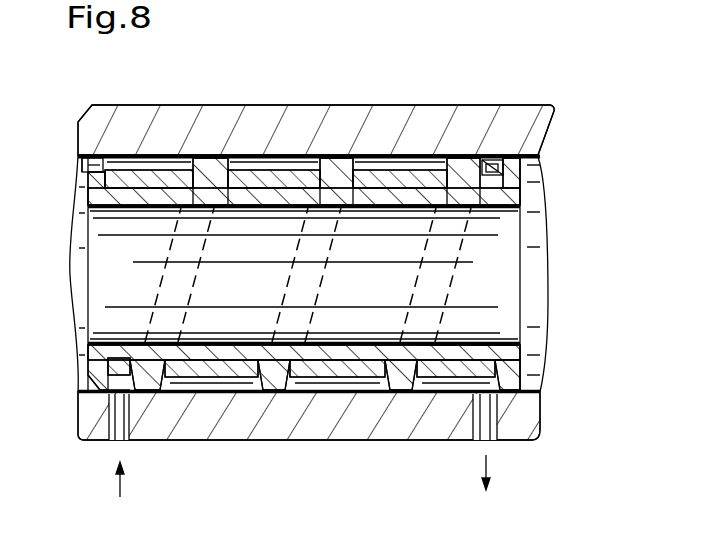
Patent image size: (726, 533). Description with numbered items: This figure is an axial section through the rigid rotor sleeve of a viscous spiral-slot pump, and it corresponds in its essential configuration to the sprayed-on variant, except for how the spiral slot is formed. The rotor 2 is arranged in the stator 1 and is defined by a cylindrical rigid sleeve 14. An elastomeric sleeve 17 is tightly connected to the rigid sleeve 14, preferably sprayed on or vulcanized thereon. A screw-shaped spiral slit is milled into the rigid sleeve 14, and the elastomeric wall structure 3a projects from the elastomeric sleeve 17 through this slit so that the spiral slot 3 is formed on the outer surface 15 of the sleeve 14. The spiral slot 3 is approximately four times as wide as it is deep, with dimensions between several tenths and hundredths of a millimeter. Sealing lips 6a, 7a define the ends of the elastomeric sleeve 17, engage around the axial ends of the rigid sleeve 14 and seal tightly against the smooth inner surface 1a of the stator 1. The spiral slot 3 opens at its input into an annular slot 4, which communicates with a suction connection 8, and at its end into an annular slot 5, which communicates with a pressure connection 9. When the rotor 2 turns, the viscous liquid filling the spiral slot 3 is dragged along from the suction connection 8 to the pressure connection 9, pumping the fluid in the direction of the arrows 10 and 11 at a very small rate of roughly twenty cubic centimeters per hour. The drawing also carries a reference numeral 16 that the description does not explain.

The stator 1 is at (533, 122).
The smooth inner surface of stator 1a is at (84, 158).
The rotor 2 is at (522, 258).
The spiral slot 3 is at (257, 160).
The wall structure 3a is at (337, 160).
The annular slot 4 is at (112, 380).
The annular slot 5 is at (490, 163).
The sealing lip 6a is at (98, 173).
The sealing lip 7a is at (545, 172).
The suction connection 8 is at (120, 425).
The pressure connection 9 is at (483, 420).
The arrow 10 is at (122, 485).
The arrow 11 is at (488, 468).
The cylindrical sleeve 14 is at (482, 365).
The outer surface 15 is at (358, 377).
The lower yoke right 16 is at (483, 350).
The elastomeric sleeve 17 is at (350, 348).